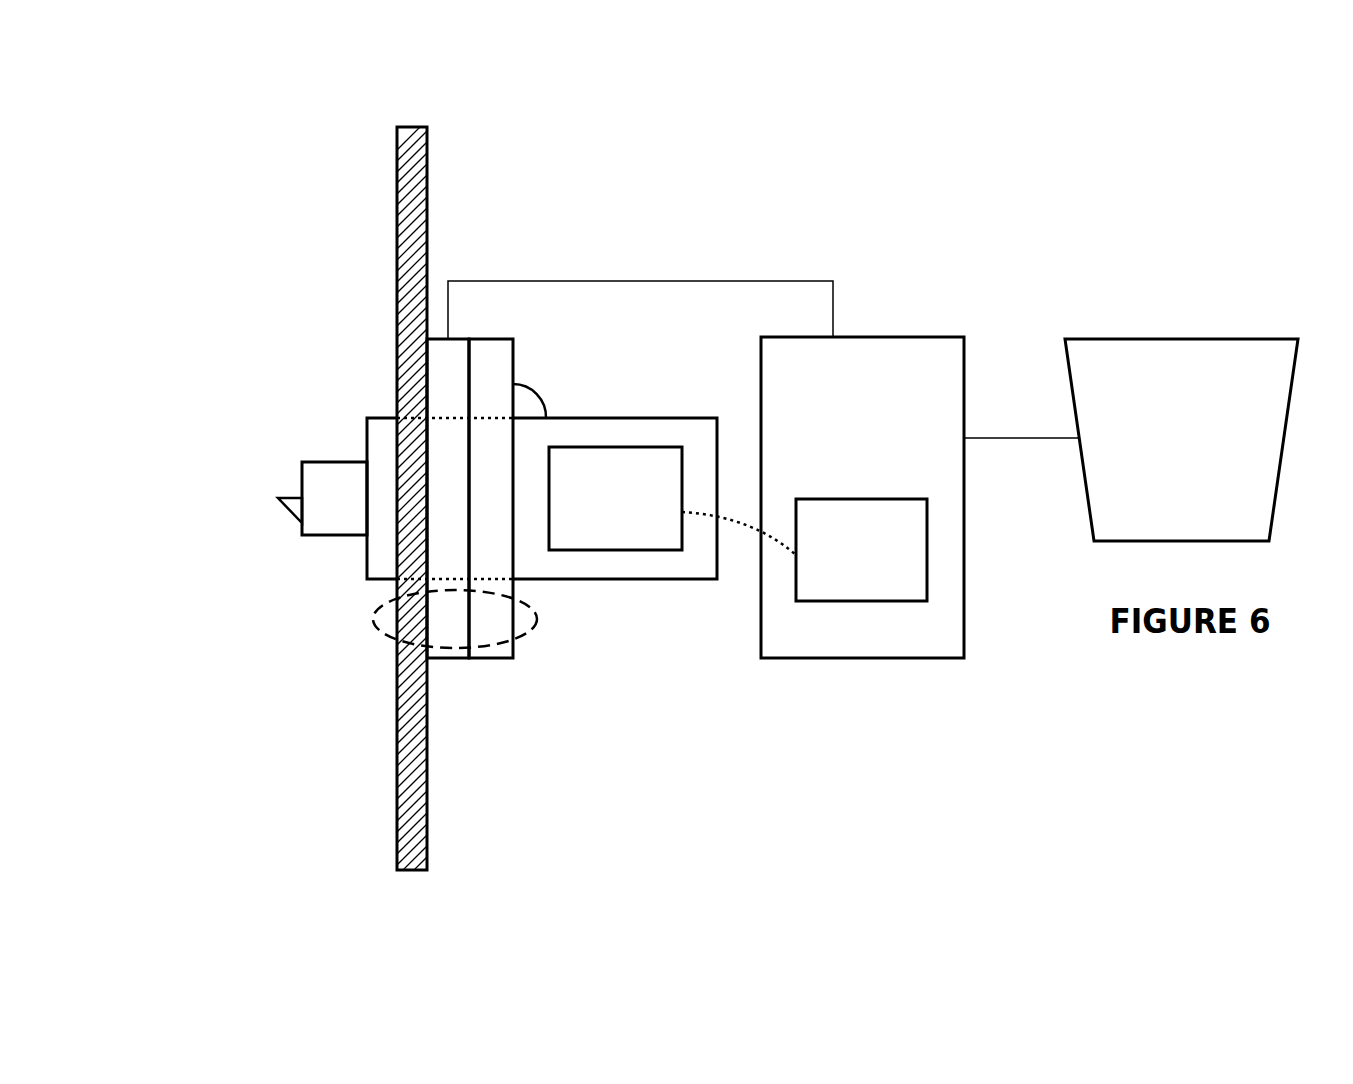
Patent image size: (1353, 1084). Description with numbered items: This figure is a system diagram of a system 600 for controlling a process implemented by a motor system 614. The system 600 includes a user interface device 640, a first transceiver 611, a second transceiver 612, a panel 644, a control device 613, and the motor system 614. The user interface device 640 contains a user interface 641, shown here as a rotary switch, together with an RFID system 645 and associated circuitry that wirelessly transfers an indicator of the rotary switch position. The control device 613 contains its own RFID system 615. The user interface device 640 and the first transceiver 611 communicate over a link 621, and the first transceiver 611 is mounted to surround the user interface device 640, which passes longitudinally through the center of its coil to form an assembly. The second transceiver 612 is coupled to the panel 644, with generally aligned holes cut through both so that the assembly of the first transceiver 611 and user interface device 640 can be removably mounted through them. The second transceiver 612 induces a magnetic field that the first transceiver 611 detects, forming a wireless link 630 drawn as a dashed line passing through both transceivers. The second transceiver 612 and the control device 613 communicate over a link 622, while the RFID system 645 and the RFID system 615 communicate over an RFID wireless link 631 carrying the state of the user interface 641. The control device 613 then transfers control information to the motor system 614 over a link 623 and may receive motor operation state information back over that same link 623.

The system 600 is at (1078, 228).
The first transceiver 611 is at (492, 660).
The second transceiver 612 is at (445, 660).
The control device 613 is at (842, 459).
The motor system 614 is at (1162, 481).
The RFID system 615 is at (842, 593).
The link 621 is at (533, 385).
The link 622 is at (725, 281).
The link 623 is at (988, 438).
The wireless link 630 is at (534, 616).
The wireless link 631 is at (747, 527).
The user interface device 640 is at (367, 563).
The user interface 641 is at (285, 507).
The panel 644 is at (427, 243).
The RFID system 645 is at (595, 541).